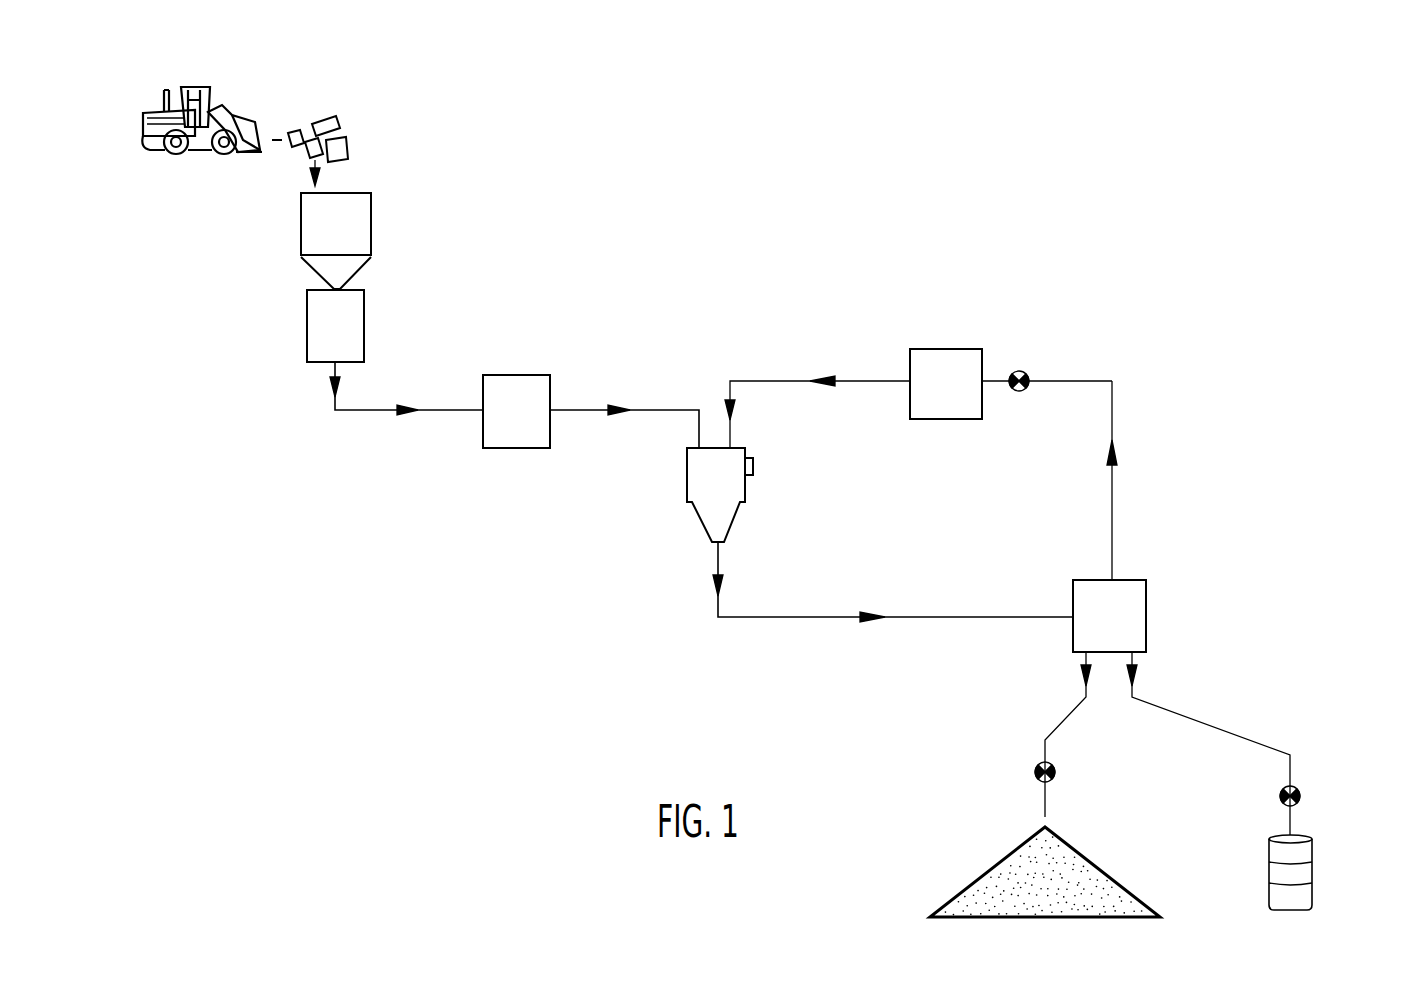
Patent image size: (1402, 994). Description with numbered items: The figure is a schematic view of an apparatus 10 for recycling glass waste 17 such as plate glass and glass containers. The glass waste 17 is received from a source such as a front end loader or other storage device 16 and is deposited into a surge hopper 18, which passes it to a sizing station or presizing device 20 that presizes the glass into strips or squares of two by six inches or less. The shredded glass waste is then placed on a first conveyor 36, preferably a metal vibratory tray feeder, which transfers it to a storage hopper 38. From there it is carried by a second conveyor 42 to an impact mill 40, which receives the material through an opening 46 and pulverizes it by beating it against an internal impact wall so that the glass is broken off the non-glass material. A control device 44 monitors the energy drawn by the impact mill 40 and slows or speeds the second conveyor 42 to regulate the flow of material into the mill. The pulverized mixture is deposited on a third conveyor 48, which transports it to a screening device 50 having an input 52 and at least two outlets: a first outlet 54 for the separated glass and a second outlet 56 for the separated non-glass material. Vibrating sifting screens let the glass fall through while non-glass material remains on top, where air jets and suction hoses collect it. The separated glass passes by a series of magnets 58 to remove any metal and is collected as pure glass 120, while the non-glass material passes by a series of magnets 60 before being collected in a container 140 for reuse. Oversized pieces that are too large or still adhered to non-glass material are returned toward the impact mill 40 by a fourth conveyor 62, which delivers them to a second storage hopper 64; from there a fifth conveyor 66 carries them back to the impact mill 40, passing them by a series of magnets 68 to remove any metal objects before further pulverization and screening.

The apparatus 10 is at (761, 218).
The storage device 16 is at (195, 86).
The glass waste 17 is at (338, 134).
The surge hopper 18 is at (371, 222).
The presizing device 20 is at (364, 322).
The first conveyor 36 is at (376, 412).
The storage hopper 38 is at (520, 375).
The impact mill 40 is at (730, 493).
The second conveyor 42 is at (652, 410).
The control device 44 is at (753, 467).
The opening 46 is at (688, 447).
The third conveyor 48 is at (818, 620).
The screening device 50 is at (1123, 632).
The input 52 is at (1073, 612).
The first outlet 54 is at (1080, 655).
The second outlet 56 is at (1135, 655).
The magnets 58 is at (1035, 771).
The magnets 60 is at (1303, 790).
The fourth conveyor 62 is at (1125, 456).
The second storage hopper 64 is at (959, 398).
The fifth conveyor 66 is at (797, 381).
The magnets 68 is at (1019, 371).
The pure glass 120 is at (985, 872).
The container 140 is at (1312, 849).